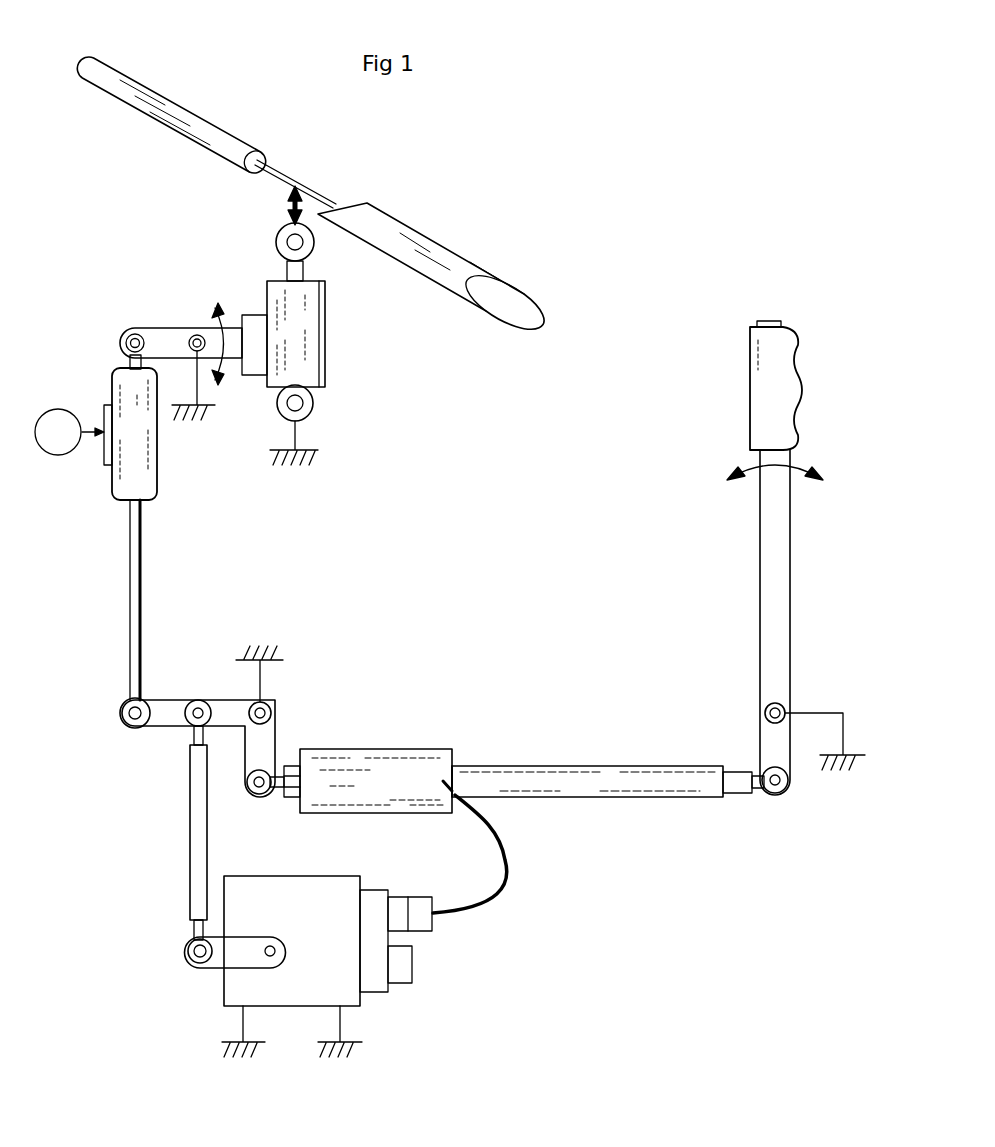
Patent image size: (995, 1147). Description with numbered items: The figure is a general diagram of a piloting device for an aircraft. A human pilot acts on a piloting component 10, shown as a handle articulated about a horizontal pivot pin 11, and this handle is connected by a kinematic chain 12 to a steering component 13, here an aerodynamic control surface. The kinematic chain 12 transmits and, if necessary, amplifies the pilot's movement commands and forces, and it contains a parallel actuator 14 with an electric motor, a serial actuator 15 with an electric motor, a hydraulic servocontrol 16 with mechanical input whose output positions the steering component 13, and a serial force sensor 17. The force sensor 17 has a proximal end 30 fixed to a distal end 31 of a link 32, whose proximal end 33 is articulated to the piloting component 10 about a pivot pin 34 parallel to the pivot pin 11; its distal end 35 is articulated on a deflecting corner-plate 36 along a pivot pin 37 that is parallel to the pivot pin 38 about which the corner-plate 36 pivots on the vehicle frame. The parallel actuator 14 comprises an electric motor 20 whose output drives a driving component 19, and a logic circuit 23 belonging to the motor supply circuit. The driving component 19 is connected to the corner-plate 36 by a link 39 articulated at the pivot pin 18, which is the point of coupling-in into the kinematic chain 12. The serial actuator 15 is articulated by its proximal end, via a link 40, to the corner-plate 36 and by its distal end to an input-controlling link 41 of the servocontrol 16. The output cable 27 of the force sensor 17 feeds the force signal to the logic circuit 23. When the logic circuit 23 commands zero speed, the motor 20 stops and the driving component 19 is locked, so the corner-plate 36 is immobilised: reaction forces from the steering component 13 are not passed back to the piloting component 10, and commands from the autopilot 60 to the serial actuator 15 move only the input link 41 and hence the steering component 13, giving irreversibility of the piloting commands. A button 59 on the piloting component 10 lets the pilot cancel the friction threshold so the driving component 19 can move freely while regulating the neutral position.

The piloting component 10 is at (765, 520).
The pivot pin 11 is at (760, 715).
The kinematic chain 12 is at (330, 620).
The steering component 13 is at (468, 270).
The parallel actuator 14 is at (342, 982).
The serial actuator 15 is at (148, 463).
The hydraulic servocontrol 16 is at (318, 330).
The serial force sensor 17 is at (365, 765).
The pivot pin 18 is at (197, 705).
The driving component 19 is at (225, 960).
The electric motor 20 is at (380, 970).
The logic circuit 23 is at (400, 907).
The output cable 27 is at (510, 877).
The proximal end 30 is at (448, 758).
The distal end 31 is at (458, 780).
The link 32 is at (568, 778).
The proximal end 33 is at (738, 794).
The pivot pin 34 is at (778, 795).
The distal end 35 is at (285, 780).
The deflecting corner-plate 36 is at (230, 712).
The pivot pin 37 is at (262, 795).
The pivot pin 38 is at (268, 705).
The link 39 is at (192, 805).
The link 40 is at (133, 560).
The input-controlling link 41 is at (158, 335).
The button 59 is at (768, 320).
The autopilot 60 is at (60, 440).